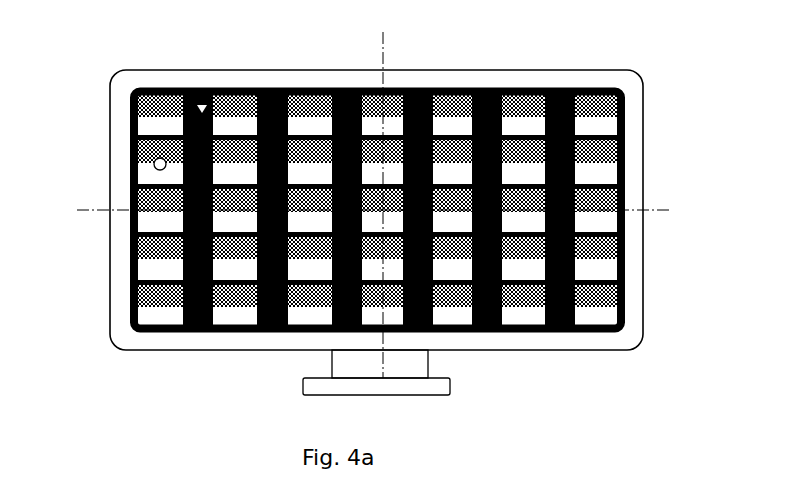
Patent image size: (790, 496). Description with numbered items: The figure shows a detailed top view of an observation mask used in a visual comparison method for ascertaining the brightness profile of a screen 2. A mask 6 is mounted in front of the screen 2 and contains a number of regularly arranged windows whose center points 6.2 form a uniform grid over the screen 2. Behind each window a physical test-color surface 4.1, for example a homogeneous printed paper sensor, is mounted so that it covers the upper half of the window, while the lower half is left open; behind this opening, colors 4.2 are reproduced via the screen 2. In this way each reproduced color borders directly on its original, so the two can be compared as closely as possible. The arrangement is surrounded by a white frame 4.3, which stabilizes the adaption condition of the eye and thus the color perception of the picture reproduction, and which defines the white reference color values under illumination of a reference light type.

The screen 2 is at (390, 209).
The physical test-color surface 4.1 is at (132, 103).
The reproduced colors 4.2 is at (160, 125).
The white frame 4.3 is at (481, 70).
The mask 6 is at (202, 94).
The center points 6.2 is at (133, 169).